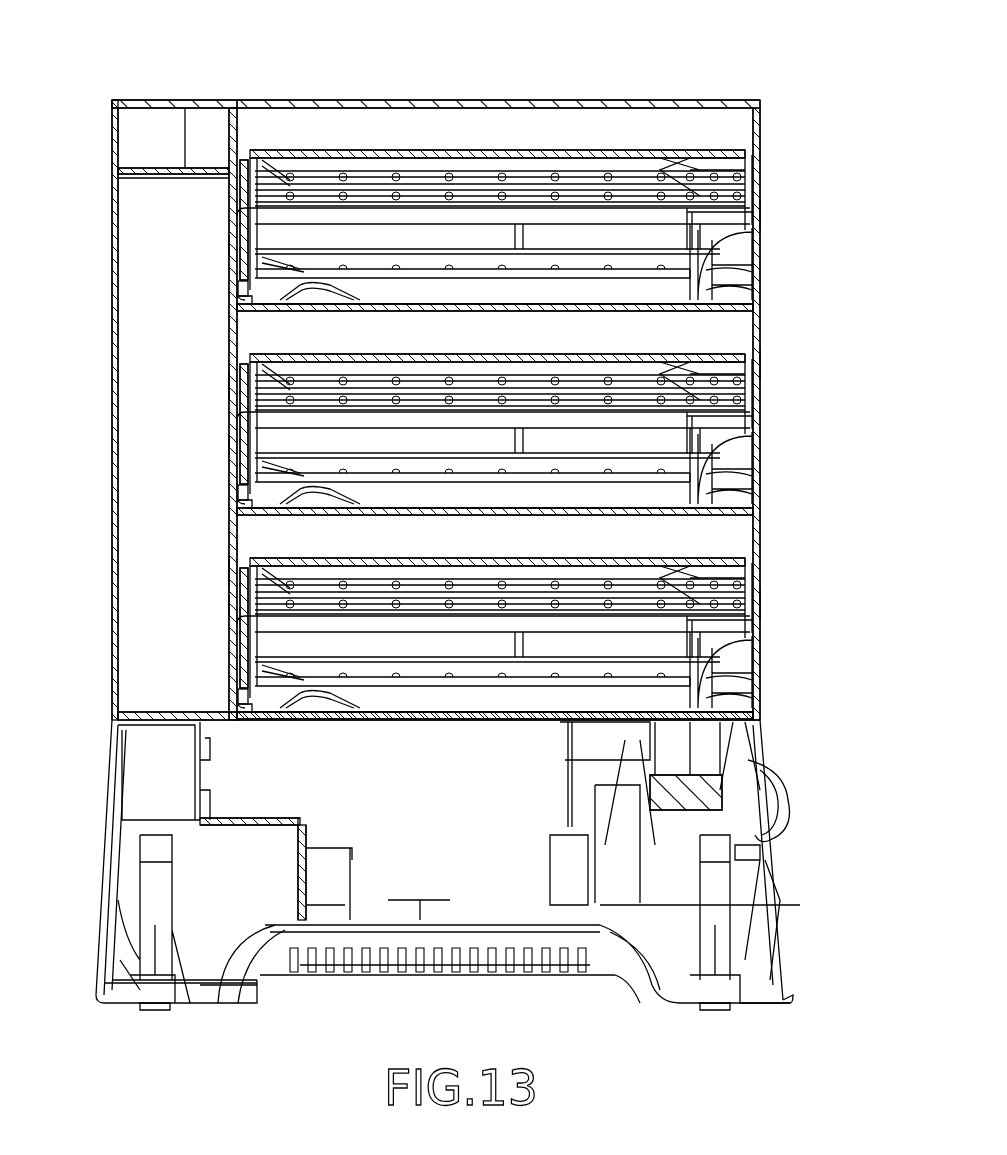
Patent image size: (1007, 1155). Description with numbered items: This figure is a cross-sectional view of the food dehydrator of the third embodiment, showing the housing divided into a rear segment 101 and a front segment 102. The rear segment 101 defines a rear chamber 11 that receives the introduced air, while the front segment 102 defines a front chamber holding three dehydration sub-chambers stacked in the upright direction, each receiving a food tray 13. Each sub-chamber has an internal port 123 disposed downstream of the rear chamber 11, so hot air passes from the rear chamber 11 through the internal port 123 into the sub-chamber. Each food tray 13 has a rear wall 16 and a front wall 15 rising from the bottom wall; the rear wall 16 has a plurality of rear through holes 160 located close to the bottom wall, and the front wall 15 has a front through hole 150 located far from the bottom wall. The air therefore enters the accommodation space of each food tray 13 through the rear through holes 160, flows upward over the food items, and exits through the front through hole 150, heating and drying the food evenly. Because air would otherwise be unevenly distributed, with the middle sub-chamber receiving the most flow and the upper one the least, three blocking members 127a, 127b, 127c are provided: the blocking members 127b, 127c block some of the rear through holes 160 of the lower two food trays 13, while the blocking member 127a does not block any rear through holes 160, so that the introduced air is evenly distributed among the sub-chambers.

The rear segment 101 is at (152, 100).
The front segment 102 is at (292, 100).
The blocking member 127a is at (228, 153).
The blocking member 127b is at (229, 380).
The blocking member 127c is at (229, 564).
The rear chamber 11 is at (130, 190).
The internal port 123 is at (218, 243).
The rear wall 16 is at (238, 253).
The rear through holes 160 is at (240, 287).
The front through hole 150 is at (758, 125).
The front wall 15 is at (760, 152).
The food tray 13 is at (765, 205).